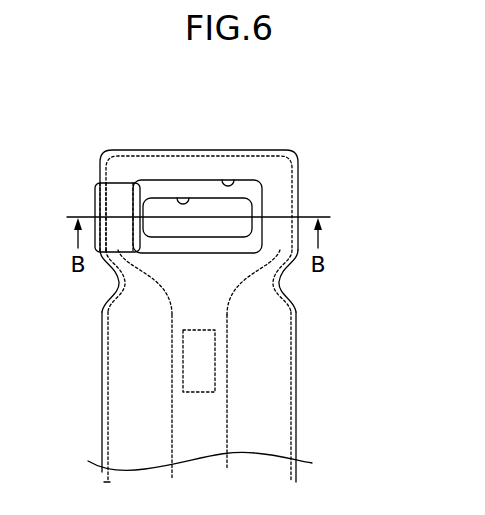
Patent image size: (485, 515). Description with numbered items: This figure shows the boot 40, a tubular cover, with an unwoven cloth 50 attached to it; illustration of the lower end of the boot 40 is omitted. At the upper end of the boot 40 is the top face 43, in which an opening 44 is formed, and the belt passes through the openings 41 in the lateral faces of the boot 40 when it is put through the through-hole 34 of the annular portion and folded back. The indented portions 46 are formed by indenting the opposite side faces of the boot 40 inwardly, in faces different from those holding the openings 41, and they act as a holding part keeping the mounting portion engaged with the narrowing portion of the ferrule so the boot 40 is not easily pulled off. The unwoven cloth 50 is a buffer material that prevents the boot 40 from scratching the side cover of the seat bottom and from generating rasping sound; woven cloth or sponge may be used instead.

The through-hole 34 is at (182, 204).
The boot 40 is at (297, 393).
The opening 41 is at (228, 183).
The top face 43 is at (262, 150).
The opening 44 is at (143, 153).
The indented portion 46 is at (280, 284).
The unwoven cloth 50 is at (115, 207).